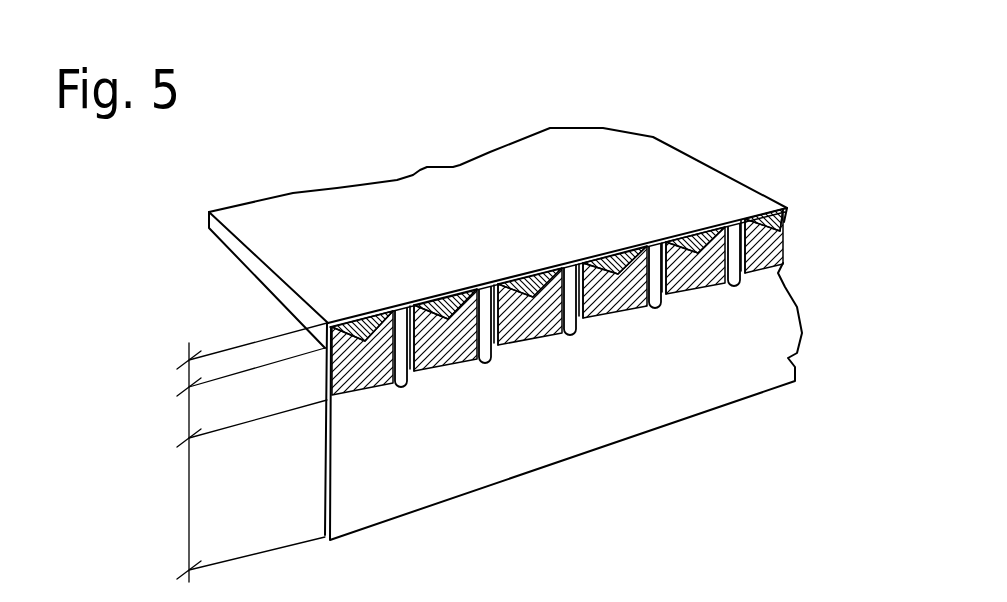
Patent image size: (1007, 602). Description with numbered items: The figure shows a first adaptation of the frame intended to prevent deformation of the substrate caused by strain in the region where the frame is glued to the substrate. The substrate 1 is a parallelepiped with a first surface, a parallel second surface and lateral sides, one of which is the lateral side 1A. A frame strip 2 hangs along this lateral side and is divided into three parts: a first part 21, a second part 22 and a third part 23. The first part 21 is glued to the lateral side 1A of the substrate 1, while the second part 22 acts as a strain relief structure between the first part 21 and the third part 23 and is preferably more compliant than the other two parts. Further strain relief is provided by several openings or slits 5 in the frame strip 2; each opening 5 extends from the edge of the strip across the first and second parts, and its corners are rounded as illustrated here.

The substrate 1 is at (511, 208).
The lateral side of the substrate 1A is at (778, 217).
The frame strip 2 is at (418, 467).
The opening or slit 5 is at (410, 377).
The first part of the frame strip 21 is at (237, 359).
The second part of the frame strip 22 is at (237, 417).
The third part of the frame strip 23 is at (236, 510).